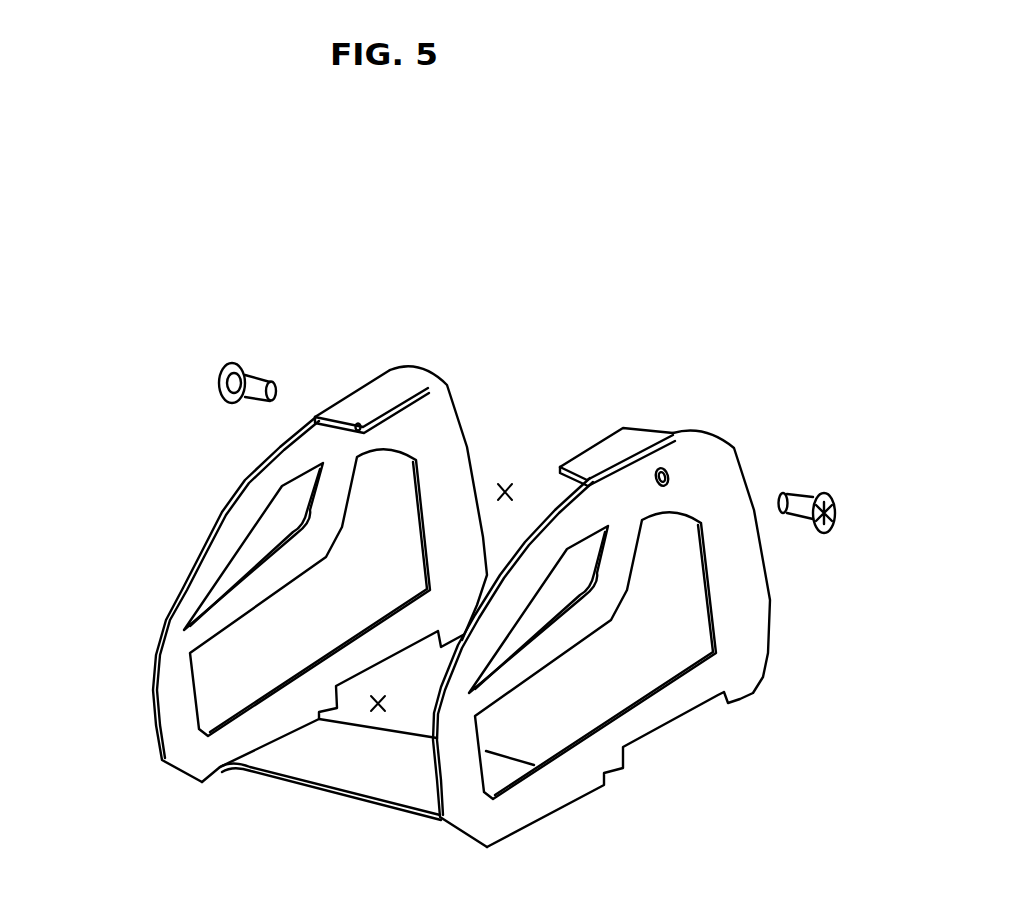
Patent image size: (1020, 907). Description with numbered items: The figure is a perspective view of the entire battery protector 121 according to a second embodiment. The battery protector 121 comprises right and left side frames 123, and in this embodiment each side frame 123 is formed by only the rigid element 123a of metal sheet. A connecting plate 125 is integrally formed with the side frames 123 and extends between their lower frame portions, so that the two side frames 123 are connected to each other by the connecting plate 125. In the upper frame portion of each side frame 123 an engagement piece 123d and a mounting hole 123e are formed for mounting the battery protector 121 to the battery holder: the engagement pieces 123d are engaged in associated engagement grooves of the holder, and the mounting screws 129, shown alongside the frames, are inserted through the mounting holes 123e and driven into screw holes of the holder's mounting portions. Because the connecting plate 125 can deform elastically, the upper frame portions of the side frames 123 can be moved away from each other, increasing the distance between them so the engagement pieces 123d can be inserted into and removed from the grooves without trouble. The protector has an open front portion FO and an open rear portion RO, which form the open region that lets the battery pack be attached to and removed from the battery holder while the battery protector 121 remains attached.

The battery protector 121 is at (597, 294).
The side frame 123 is at (241, 488).
The rigid element 123a is at (203, 548).
The engagement piece 123d is at (386, 382).
The mounting hole 123e is at (457, 423).
The connecting plate 125 is at (338, 776).
The mounting screw 129 is at (224, 366).
The open rear portion RO is at (509, 488).
The open front portion FO is at (372, 706).